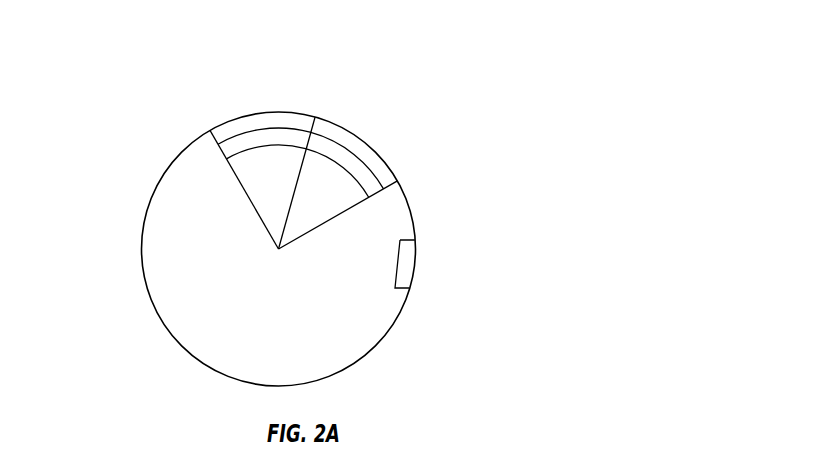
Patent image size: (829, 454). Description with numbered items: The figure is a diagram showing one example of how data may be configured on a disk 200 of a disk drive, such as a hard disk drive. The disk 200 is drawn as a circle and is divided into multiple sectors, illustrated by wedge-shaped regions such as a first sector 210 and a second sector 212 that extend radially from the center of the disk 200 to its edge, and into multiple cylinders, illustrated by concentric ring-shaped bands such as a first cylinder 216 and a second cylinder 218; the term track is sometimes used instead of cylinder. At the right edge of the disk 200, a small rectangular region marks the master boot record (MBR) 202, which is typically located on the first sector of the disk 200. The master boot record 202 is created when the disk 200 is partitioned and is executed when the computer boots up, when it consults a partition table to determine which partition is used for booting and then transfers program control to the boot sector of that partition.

The disk 200 is at (127, 142).
The master boot record (MBR) 202 is at (450, 405).
The sector-1 210 is at (315, 128).
The sector-2 212 is at (378, 193).
The cylinder-1 216 is at (242, 124).
The cylinder-2 218 is at (270, 137).